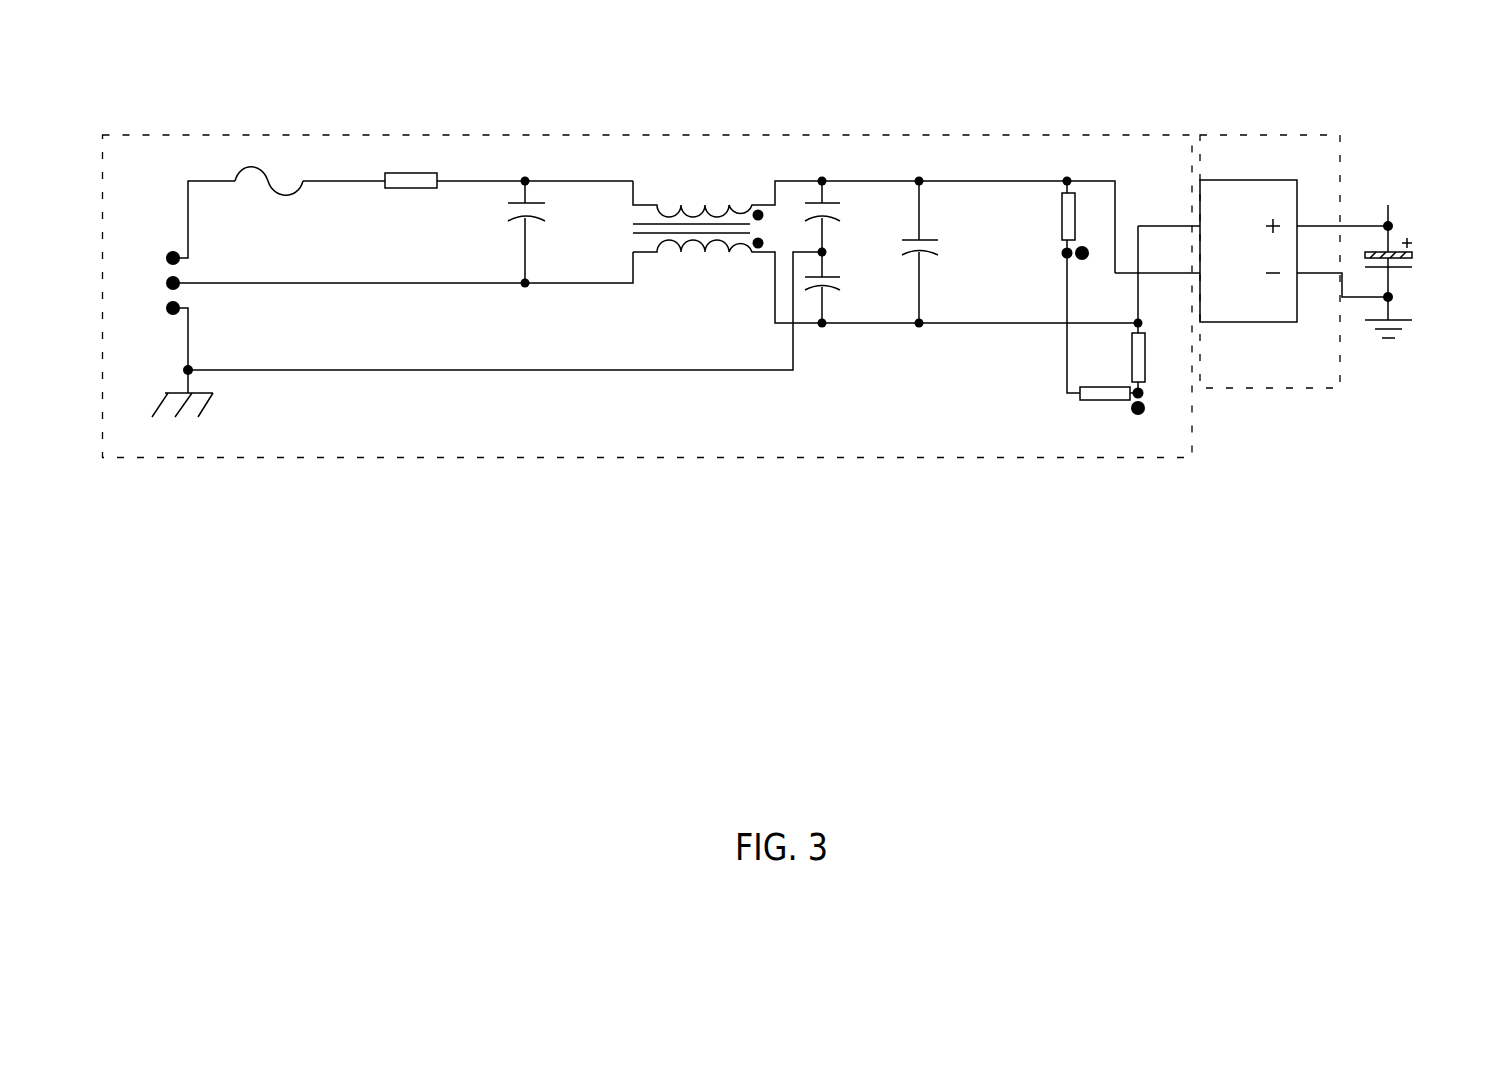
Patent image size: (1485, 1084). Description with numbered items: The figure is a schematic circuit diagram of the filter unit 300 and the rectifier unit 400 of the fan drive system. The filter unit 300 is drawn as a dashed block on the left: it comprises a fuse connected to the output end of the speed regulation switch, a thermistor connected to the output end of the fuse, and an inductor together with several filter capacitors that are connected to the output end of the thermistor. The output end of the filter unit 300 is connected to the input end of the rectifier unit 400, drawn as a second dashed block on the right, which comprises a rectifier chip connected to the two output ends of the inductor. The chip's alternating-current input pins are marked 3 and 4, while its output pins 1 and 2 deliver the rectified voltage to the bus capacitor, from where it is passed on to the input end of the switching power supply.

The filter unit 300 is at (573, 135).
The rectifier unit 400 is at (1273, 135).
The rectifier output terminal 1 (DC+) 1 is at (1342, 215).
The rectifier output terminal 2 is at (1342, 276).
The rectifier AC input terminal 3 is at (1169, 215).
The rectifier AC input terminal 4 is at (1157, 264).